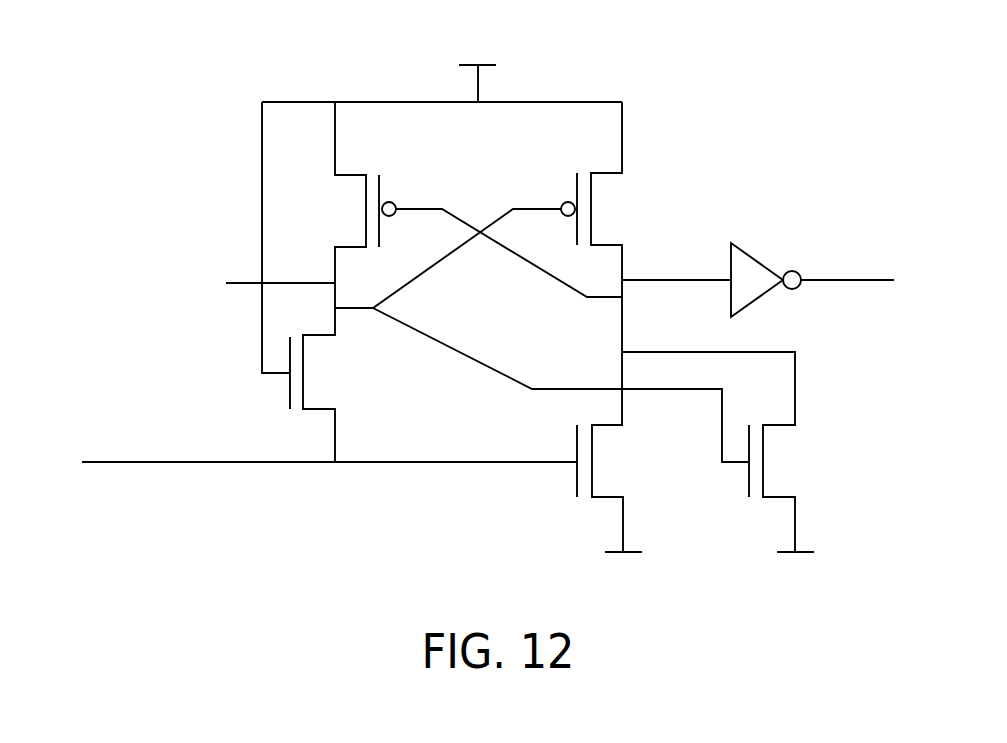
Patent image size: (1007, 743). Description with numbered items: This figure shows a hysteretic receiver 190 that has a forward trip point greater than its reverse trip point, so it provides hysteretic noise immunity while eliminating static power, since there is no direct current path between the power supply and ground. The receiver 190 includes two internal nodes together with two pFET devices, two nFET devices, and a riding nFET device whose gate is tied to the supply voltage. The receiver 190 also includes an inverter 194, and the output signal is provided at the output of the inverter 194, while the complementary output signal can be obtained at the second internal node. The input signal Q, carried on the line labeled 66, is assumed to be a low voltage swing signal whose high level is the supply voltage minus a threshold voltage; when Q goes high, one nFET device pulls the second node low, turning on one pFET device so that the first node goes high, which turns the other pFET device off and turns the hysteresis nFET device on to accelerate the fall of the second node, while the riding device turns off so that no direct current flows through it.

The hysteretic receiver 190 is at (166, 77).
The inverter 194 is at (758, 260).
The Q input signal line 66 is at (155, 463).